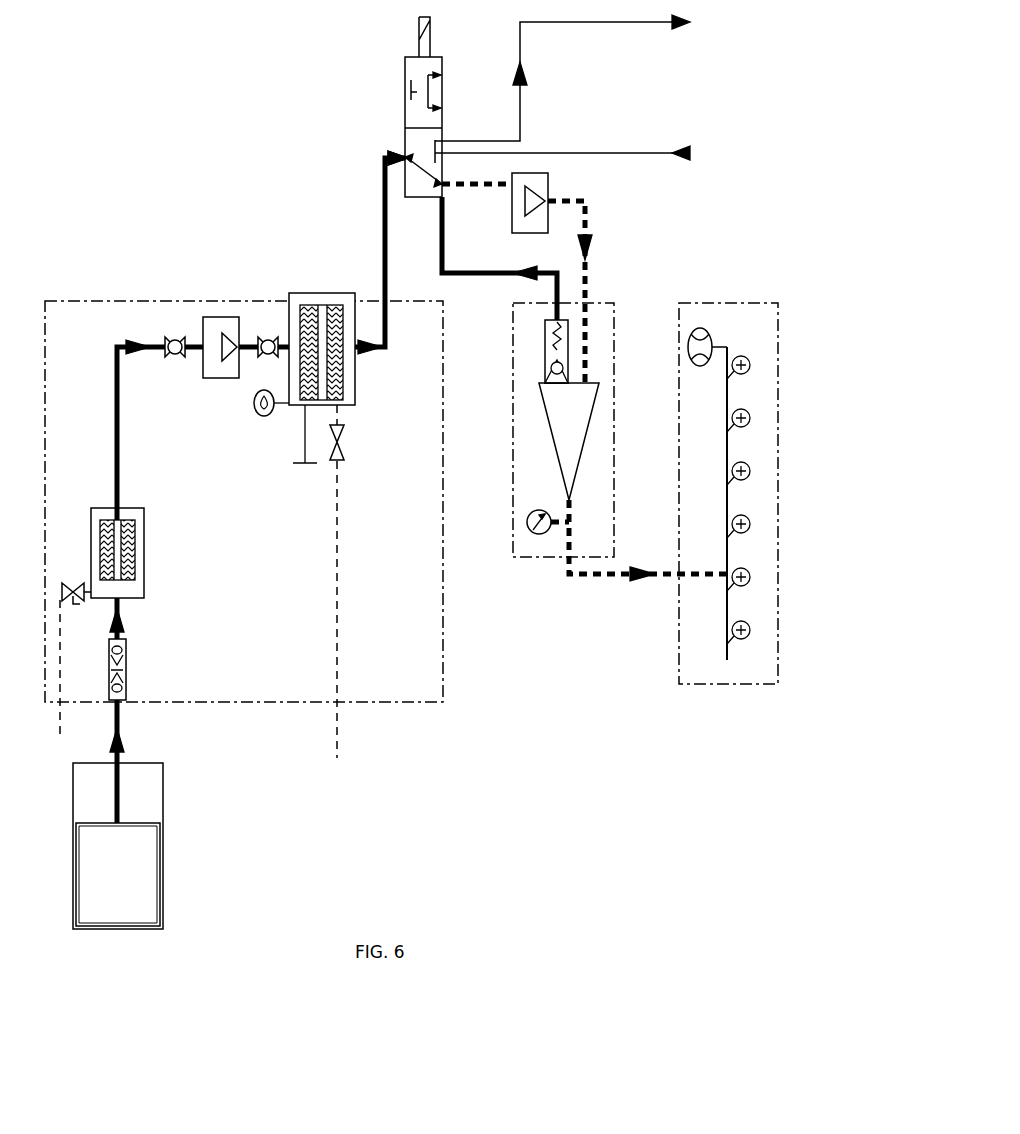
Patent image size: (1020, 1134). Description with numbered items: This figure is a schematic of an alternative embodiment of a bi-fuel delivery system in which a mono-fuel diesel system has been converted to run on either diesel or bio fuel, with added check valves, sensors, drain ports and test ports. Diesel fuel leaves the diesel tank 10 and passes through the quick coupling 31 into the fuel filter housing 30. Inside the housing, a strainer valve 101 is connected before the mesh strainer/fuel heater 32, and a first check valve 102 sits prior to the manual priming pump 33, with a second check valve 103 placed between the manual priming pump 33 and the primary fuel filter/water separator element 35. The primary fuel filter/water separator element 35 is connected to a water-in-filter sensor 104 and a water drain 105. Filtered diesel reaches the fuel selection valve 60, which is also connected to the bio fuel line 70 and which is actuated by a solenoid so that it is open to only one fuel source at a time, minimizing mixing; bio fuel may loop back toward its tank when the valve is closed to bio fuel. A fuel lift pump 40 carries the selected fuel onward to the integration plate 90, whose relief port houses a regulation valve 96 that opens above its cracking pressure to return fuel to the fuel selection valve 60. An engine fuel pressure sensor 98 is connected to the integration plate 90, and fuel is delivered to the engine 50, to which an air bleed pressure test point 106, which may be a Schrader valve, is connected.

The diesel tank 10 is at (128, 882).
The fuel filter housing 30 is at (233, 708).
The quick coupling 31 is at (130, 665).
The mesh strainer/fuel heater 32 is at (100, 496).
The manual priming pump 33 is at (215, 313).
The primary fuel filter/water separator element 35 is at (322, 290).
The fuel lift pump 40 is at (533, 170).
The engine 50 is at (730, 686).
The fuel selection valve 60 is at (402, 76).
The bio fuel line 70 is at (574, 89).
The integration plate 90 is at (615, 492).
The regulation valve 96 is at (543, 348).
The engine fuel pressure sensor 98 is at (537, 546).
The strainer valve 101 is at (58, 590).
The first check valve 102 is at (172, 362).
The second check valve 103 is at (268, 333).
The water-in-filter sensor 104 is at (261, 419).
The water drain 105 is at (344, 446).
The air bleed pressure test point 106 is at (699, 325).